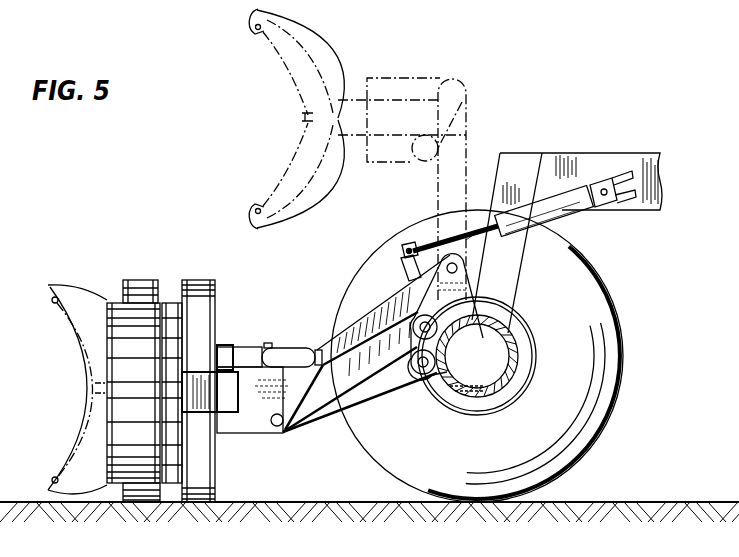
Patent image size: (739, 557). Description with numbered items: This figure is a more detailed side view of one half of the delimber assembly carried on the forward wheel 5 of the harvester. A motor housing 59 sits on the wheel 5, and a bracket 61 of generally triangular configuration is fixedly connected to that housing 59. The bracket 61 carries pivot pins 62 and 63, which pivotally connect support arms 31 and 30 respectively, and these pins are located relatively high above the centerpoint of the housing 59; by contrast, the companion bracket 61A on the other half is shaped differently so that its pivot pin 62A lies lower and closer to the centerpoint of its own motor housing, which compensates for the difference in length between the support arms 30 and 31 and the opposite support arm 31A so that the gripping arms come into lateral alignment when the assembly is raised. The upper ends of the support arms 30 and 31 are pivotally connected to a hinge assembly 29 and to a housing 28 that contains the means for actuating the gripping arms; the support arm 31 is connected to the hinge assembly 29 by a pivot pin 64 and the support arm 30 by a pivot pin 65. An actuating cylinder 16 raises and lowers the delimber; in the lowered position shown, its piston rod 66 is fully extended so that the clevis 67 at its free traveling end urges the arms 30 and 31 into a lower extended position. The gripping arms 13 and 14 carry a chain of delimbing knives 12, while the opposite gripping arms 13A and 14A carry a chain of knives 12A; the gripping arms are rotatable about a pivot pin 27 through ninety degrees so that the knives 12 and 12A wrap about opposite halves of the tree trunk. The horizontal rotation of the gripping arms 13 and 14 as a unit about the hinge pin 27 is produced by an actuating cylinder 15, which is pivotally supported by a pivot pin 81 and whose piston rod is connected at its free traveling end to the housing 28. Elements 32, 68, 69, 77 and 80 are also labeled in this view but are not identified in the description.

The forward wheel 5 is at (625, 369).
The chain of delimbing knives 12 is at (168, 282).
The chain of knives 12A is at (84, 366).
The gripping arm 13 is at (217, 305).
The gripping arm 13A is at (143, 282).
The gripping arm 14 is at (322, 202).
The gripping arm 14A is at (140, 503).
The actuating cylinder 15 is at (290, 348).
The actuating cylinder 16 is at (558, 214).
The pivot pin 27 is at (228, 347).
The housing 28 is at (410, 105).
The hinge assembly 29 is at (384, 78).
The support arm 30 is at (367, 303).
The support arm 31 is at (345, 397).
The support arm 31A is at (352, 412).
The frame plate 32 is at (632, 213).
The motor housing 59 is at (525, 369).
The bracket 61 is at (474, 291).
The bracket 61A is at (413, 375).
The pivot pin 62 is at (412, 332).
The pivot pin 62A is at (437, 355).
The pivot pin 63 is at (452, 274).
The pivot pin 64 is at (278, 427).
The pivot pin 65 is at (305, 390).
The piston rod 66 is at (471, 237).
The clevis 67 is at (405, 247).
The pin 68 is at (400, 251).
The strap 69 is at (403, 269).
The strut 77 is at (523, 282).
The cap 80 is at (266, 343).
The pivot pin 81 is at (268, 370).